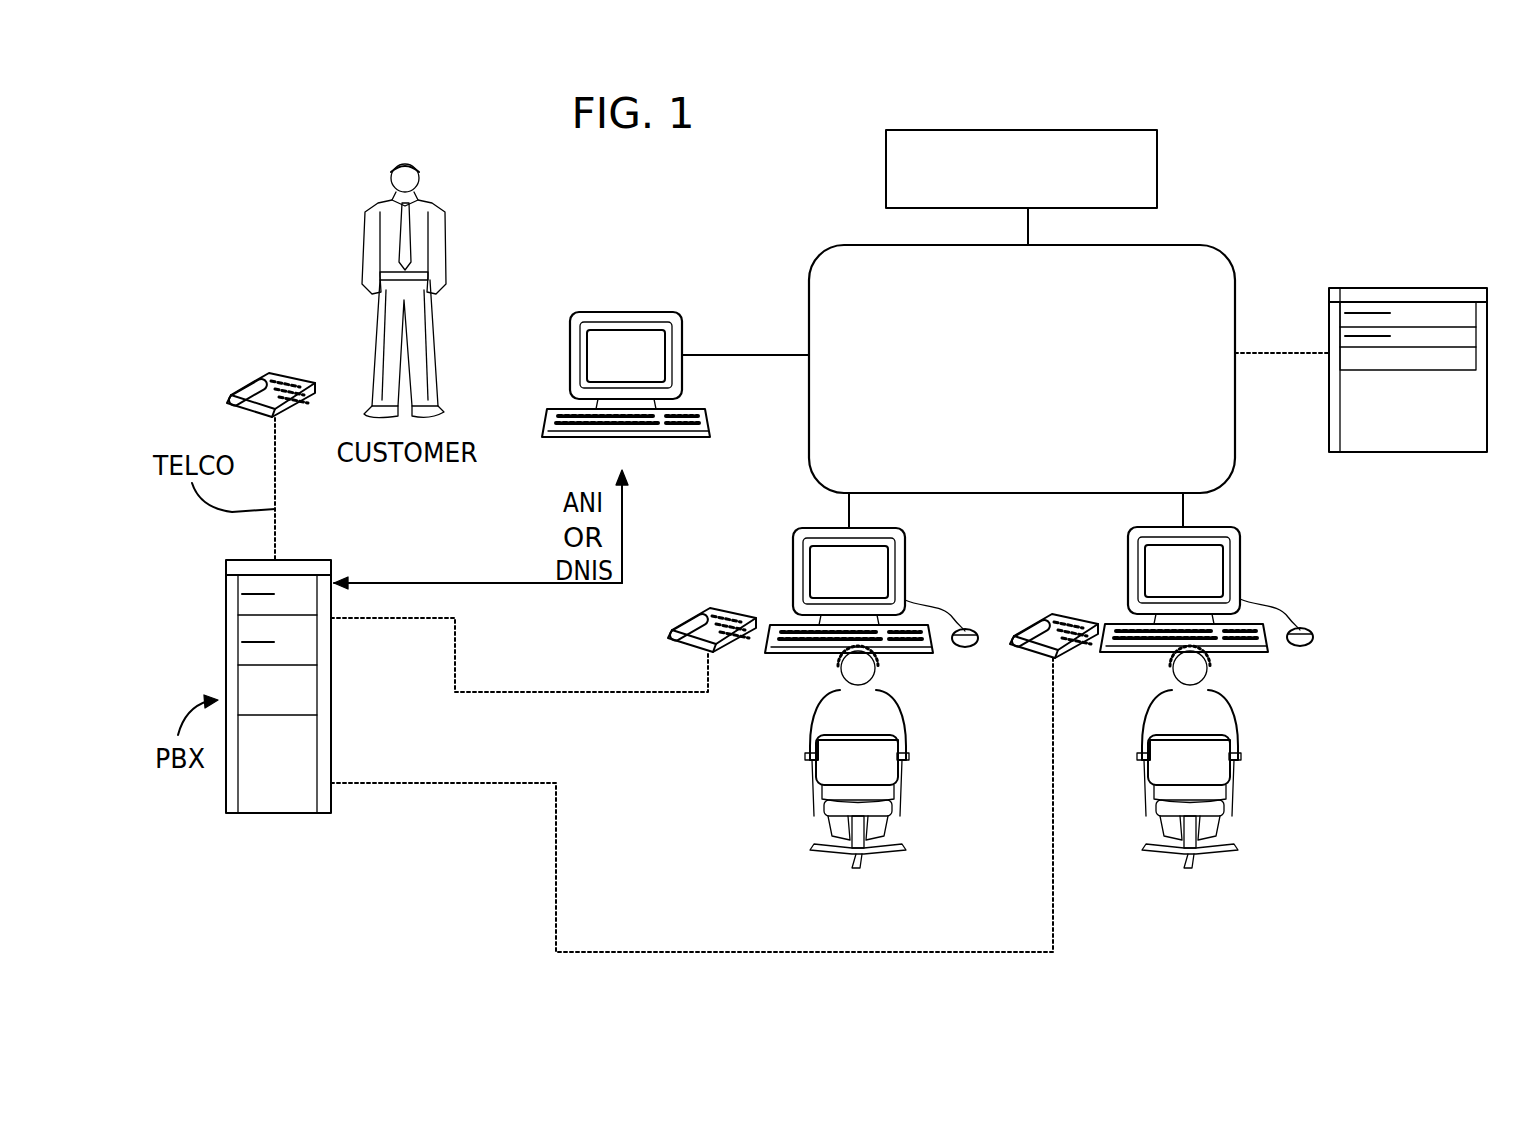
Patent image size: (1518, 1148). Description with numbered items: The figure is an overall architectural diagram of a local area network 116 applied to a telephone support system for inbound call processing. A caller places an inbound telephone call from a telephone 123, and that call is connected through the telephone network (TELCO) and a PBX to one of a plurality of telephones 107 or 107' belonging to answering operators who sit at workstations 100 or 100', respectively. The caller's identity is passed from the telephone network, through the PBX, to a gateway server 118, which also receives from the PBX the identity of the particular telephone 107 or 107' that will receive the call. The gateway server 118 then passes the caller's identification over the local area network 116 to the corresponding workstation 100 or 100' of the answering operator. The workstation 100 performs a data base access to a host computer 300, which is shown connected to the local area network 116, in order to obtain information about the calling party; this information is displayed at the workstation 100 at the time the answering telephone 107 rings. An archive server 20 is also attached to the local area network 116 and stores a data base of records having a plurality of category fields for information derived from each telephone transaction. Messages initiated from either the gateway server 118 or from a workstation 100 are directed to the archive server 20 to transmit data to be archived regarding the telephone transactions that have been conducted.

The telephone 123 is at (313, 352).
The gateway server 118 is at (674, 304).
The archive server 20 is at (1010, 197).
The local area network 116 is at (1008, 334).
The host computer 300 is at (1460, 274).
The telephone 107 is at (714, 599).
The workstation 100 is at (891, 735).
The telephone 107' is at (1062, 603).
The workstation 100' is at (1232, 731).